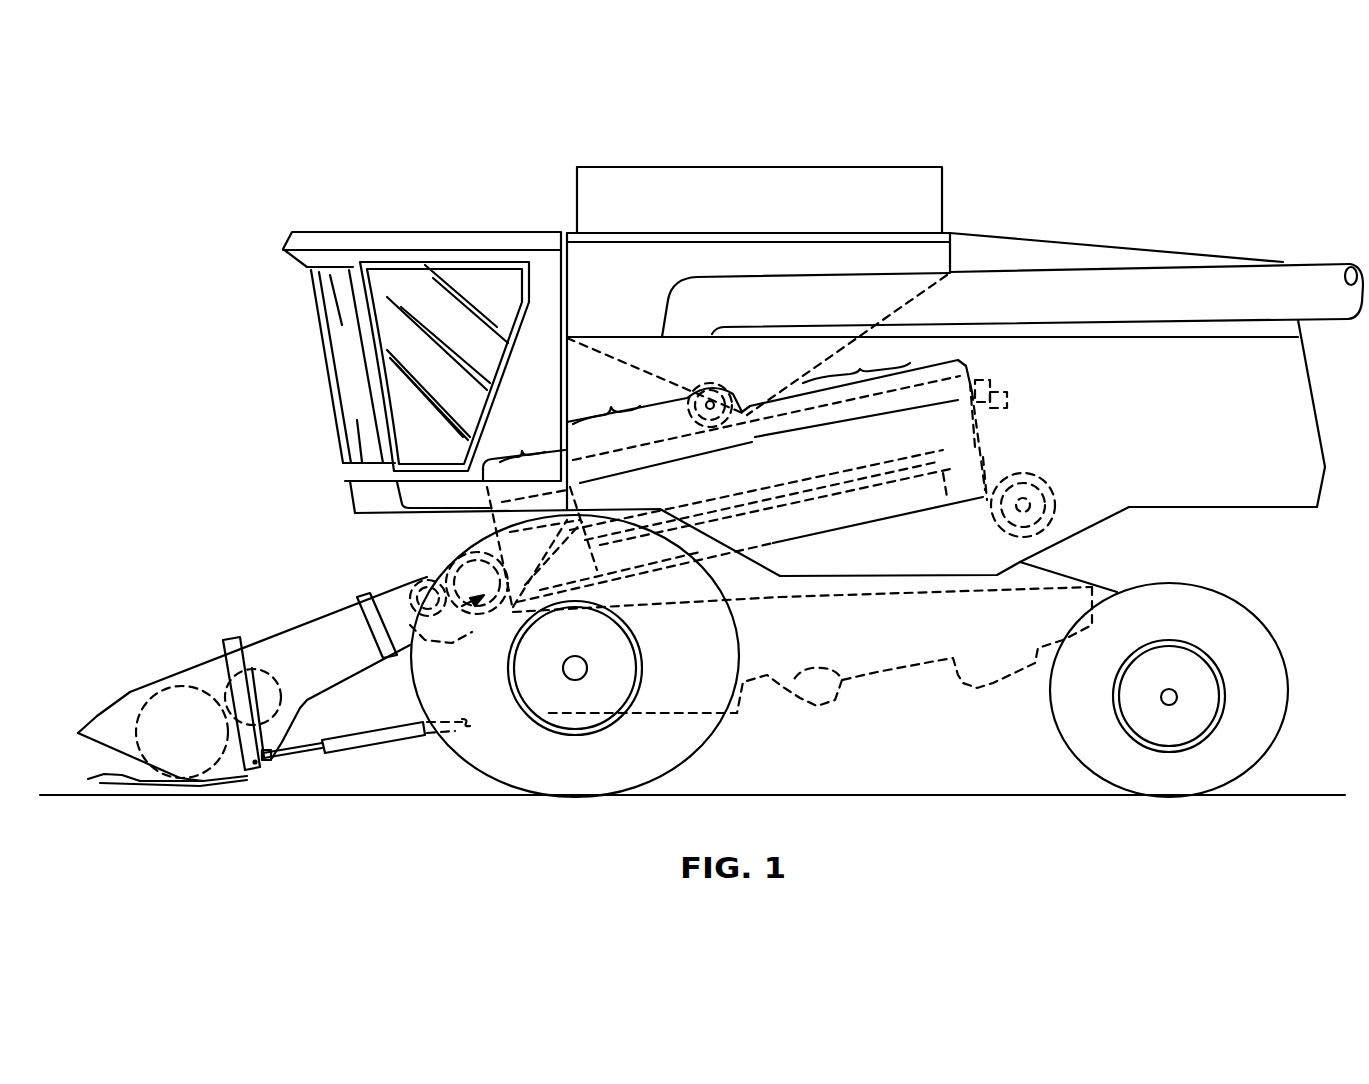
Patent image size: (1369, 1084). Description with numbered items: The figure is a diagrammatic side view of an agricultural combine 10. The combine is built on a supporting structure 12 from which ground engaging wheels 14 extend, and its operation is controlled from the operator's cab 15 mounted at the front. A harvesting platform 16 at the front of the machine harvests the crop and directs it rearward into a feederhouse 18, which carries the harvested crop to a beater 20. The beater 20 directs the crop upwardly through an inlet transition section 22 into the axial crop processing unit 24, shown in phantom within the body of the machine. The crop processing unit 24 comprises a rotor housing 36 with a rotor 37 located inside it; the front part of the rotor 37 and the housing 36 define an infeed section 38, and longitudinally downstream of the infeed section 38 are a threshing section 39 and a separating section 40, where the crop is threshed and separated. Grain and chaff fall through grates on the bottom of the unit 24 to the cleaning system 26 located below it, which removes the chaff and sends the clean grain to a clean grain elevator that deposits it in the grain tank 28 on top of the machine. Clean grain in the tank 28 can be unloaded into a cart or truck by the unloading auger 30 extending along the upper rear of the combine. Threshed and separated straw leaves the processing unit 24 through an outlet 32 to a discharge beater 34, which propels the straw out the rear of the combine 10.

The agricultural combine 10 is at (1083, 158).
The supporting structure 12 is at (762, 592).
The ground engaging wheels 14 is at (655, 775).
The operator's cab 15 is at (472, 345).
The harvesting platform 16 is at (192, 665).
The feederhouse 18 is at (318, 617).
The beater 20 is at (447, 580).
The inlet transition section 22 is at (540, 553).
The axial crop processing unit 24 is at (870, 533).
The cleaning system 26 is at (873, 676).
The grain tank 28 is at (632, 290).
The unloading auger 30 is at (1226, 307).
The outlet 32 is at (995, 447).
The discharge beater 34 is at (1043, 477).
The rotor housing 36 is at (660, 573).
The rotor 37 is at (611, 578).
The infeed section 38 is at (540, 516).
The threshing section 39 is at (606, 402).
The separating section 40 is at (856, 362).